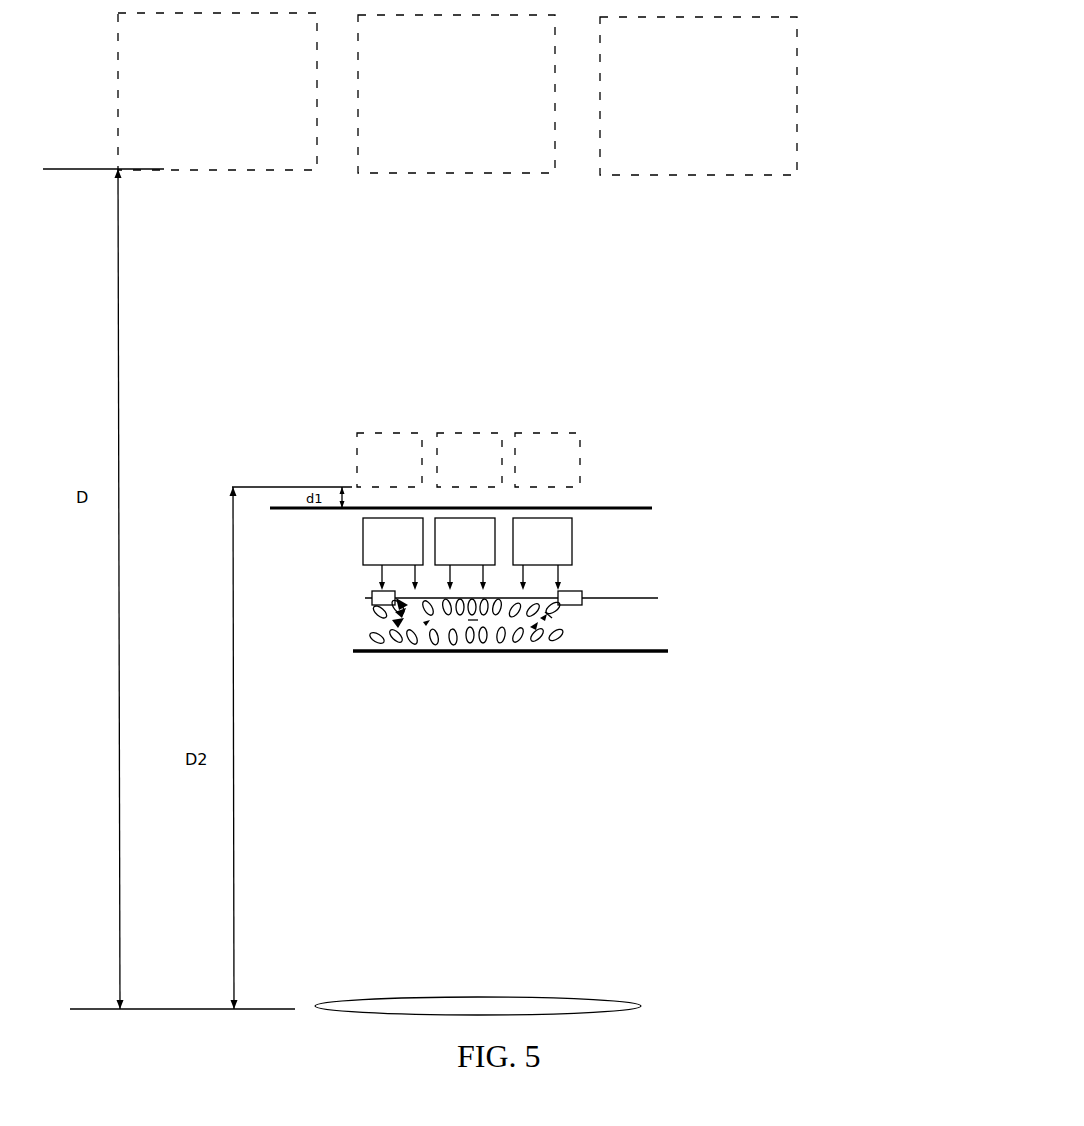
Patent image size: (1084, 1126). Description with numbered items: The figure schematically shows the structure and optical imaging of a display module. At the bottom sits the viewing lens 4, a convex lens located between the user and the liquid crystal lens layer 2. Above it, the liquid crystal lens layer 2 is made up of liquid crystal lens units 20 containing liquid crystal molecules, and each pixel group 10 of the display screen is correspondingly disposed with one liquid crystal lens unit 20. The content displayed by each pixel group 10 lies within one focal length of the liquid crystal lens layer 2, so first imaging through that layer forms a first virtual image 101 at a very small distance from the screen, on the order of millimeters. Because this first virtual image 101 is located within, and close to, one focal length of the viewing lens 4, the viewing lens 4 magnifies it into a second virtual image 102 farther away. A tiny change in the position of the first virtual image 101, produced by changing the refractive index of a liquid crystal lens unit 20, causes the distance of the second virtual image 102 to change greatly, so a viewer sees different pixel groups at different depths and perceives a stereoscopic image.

The liquid crystal lens layer 2 is at (625, 653).
The viewing lens 4 is at (625, 998).
The pixel group 10 is at (547, 548).
The liquid crystal lens unit 20 is at (543, 614).
The first virtual image 101 is at (545, 434).
The second virtual image 102 is at (535, 132).